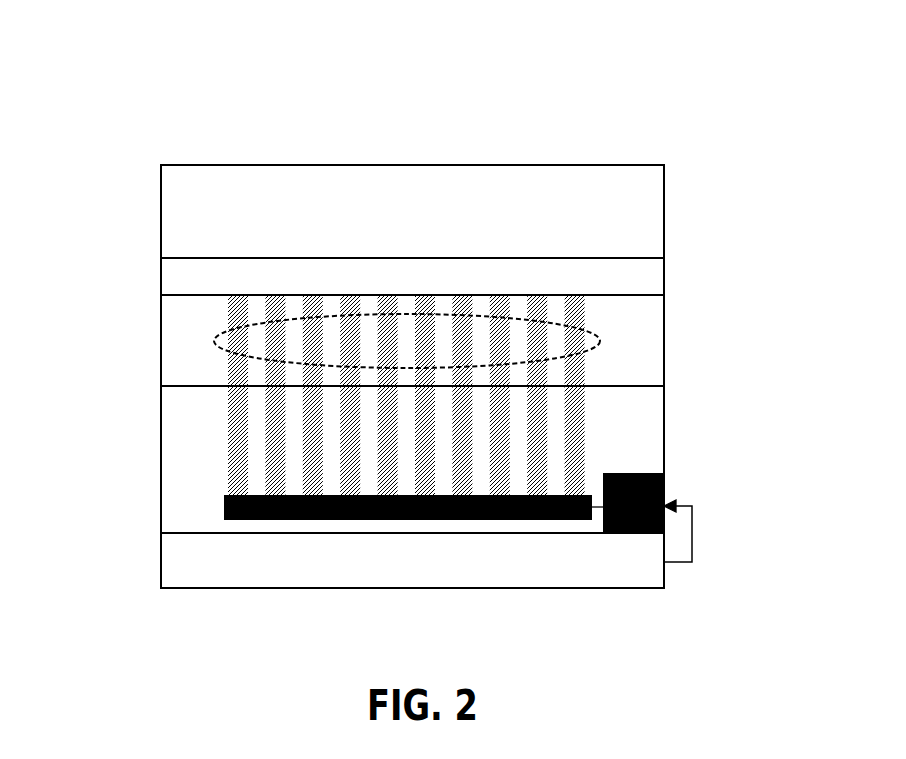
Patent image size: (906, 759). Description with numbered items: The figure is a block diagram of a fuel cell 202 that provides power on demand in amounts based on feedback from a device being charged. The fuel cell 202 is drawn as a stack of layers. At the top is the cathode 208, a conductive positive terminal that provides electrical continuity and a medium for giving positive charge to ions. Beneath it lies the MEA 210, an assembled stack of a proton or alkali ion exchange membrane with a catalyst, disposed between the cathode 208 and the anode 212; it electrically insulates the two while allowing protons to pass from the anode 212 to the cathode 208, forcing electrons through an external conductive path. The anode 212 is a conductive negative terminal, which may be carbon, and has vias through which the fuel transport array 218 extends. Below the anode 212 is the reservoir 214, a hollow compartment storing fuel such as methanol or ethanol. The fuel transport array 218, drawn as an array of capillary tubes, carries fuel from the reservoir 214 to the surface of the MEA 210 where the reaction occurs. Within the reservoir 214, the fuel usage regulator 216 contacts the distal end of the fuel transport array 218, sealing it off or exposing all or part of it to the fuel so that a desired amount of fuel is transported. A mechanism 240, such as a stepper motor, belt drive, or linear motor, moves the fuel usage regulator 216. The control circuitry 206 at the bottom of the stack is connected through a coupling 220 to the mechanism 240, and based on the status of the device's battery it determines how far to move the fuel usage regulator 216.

The fuel cell 202 is at (635, 113).
The control circuitry 206 is at (161, 562).
The cathode 208 is at (161, 213).
The MEA 210 is at (161, 275).
The anode 212 is at (161, 342).
The reservoir 214 is at (161, 440).
The fuel usage regulator 216 is at (224, 507).
The fuel transport array 218 is at (600, 341).
The coupling 220 is at (692, 537).
The mechanism 240 is at (637, 534).